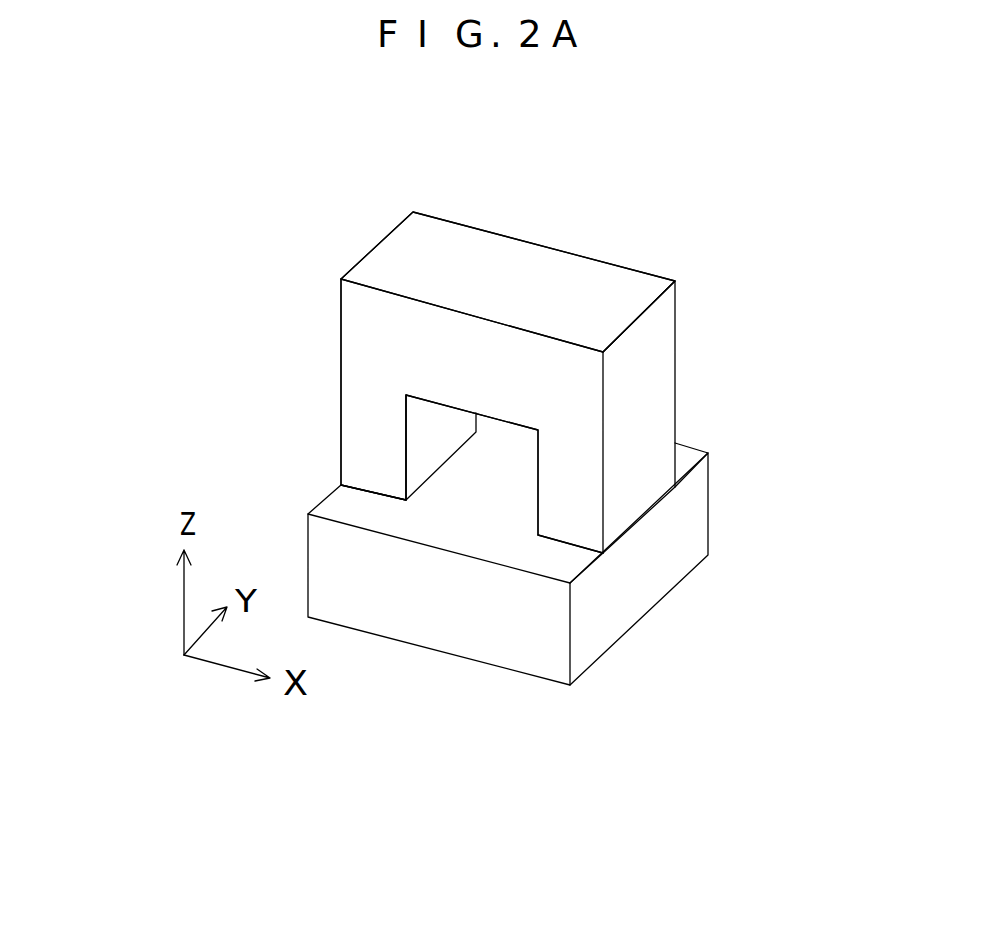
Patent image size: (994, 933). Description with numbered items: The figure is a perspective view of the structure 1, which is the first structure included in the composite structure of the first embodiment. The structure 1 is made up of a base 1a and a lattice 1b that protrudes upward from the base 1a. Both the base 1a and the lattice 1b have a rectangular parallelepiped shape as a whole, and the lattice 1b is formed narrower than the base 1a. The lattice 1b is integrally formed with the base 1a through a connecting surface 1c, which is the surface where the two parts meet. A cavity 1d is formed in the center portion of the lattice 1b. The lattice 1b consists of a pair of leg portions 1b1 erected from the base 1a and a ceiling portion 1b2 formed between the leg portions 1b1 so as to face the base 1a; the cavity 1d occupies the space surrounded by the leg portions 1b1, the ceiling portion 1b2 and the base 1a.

The structure 1 is at (577, 228).
The base 1a is at (432, 613).
The lattice 1b is at (688, 303).
The leg portions 1b1 is at (350, 422).
The ceiling portion 1b2 is at (462, 352).
The connecting surface 1c is at (357, 487).
The cavity 1d is at (497, 468).